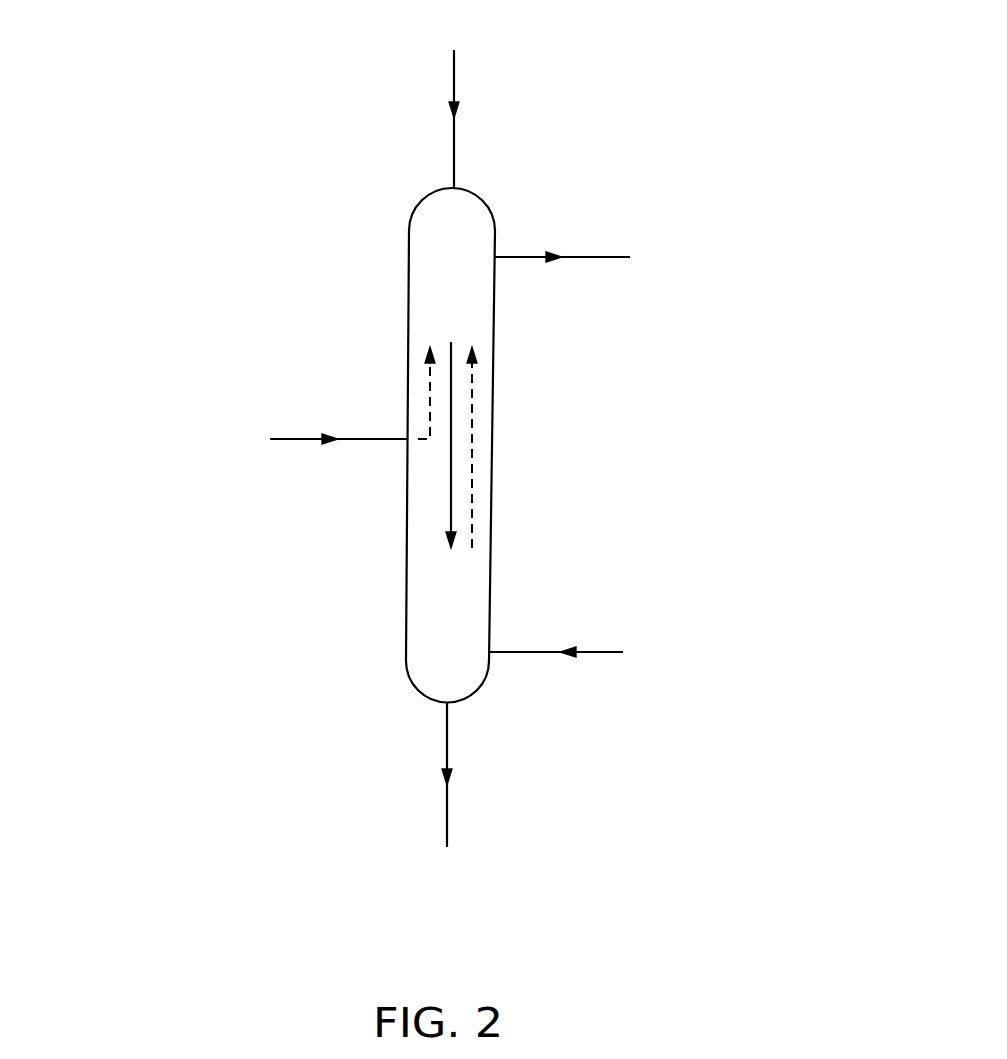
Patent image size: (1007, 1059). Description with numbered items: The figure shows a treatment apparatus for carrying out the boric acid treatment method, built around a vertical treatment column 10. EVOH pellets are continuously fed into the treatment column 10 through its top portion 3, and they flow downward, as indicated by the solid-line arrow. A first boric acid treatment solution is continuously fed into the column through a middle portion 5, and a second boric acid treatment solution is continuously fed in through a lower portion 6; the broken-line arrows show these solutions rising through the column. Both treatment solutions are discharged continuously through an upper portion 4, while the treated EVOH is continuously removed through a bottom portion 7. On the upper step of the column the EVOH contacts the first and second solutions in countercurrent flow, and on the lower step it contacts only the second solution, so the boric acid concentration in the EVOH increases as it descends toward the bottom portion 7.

The top portion 3 is at (463, 182).
The upper portion 4 is at (500, 250).
The middle portion 5 is at (403, 435).
The lower portion 6 is at (495, 643).
The bottom portion 7 is at (440, 710).
The treatment column 10 is at (492, 508).